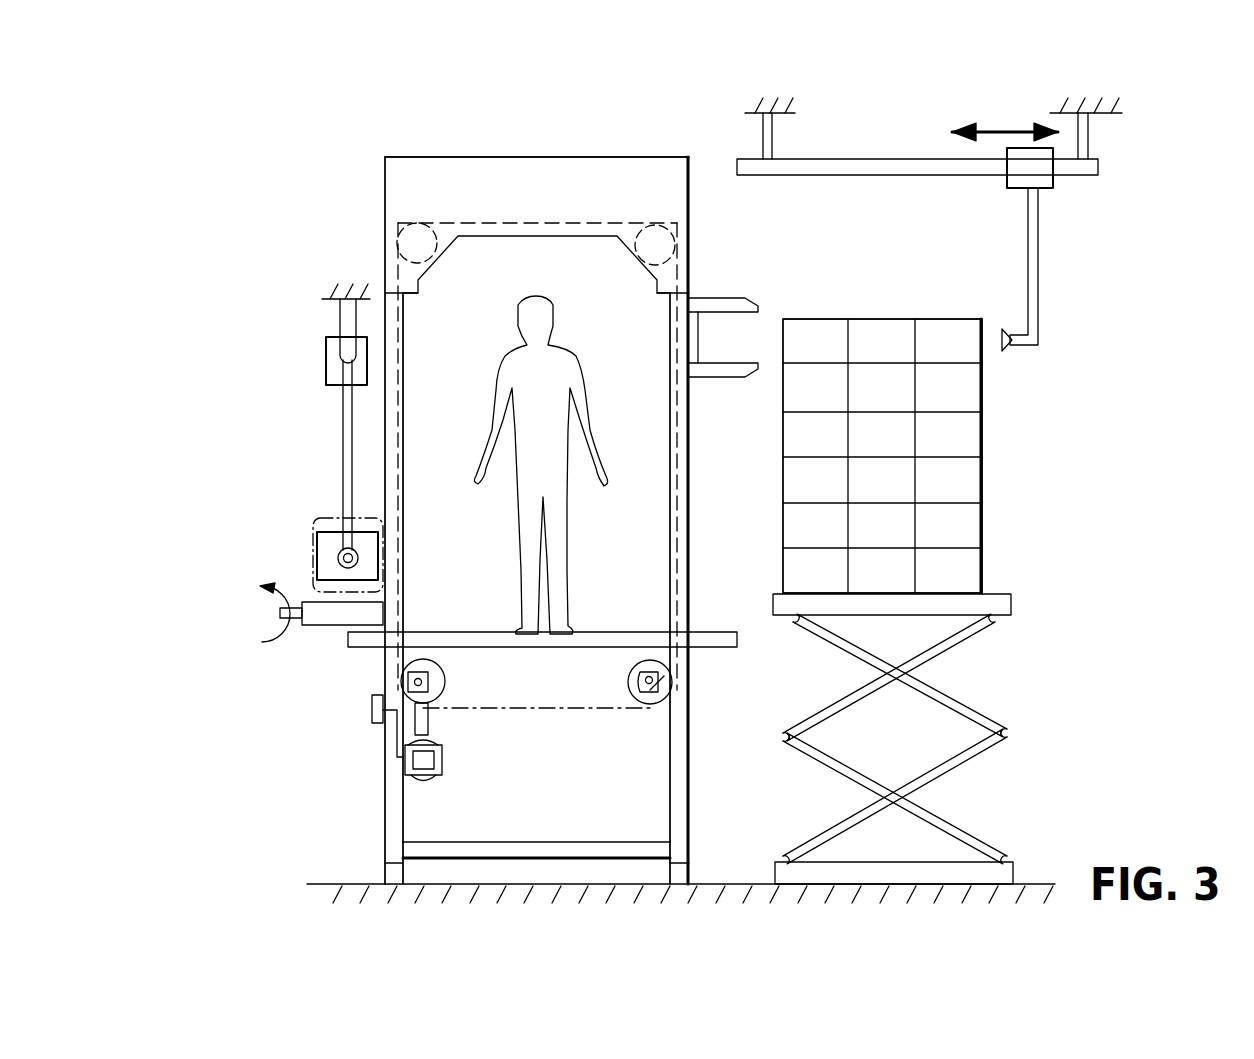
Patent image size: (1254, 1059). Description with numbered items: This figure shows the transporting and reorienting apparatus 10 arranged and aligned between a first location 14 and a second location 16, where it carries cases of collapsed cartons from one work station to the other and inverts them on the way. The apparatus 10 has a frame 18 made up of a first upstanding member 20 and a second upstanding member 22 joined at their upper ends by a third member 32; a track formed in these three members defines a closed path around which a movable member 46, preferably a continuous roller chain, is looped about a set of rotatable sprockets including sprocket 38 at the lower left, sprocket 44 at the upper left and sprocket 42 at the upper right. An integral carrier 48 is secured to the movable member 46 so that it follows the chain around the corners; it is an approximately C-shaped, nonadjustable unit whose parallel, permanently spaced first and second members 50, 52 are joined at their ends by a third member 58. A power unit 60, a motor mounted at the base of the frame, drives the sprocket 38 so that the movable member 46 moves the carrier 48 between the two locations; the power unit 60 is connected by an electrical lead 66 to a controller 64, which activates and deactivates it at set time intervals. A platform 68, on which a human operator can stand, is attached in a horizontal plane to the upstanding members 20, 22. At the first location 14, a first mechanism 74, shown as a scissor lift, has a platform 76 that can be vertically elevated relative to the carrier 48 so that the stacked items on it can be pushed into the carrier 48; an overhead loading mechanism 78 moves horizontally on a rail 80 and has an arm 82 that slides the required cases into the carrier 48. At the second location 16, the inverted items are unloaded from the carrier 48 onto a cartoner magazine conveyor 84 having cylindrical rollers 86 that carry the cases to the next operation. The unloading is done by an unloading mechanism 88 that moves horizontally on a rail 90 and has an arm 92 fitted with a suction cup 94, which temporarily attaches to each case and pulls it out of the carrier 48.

The transporting and reorienting apparatus 10 is at (682, 95).
The first location 14 is at (787, 276).
The second location 16 is at (287, 472).
The frame 18 is at (432, 148).
The first upstanding member 20 is at (385, 232).
The second upstanding member 22 is at (690, 515).
The third member 32 is at (540, 157).
The sprocket 38 is at (446, 683).
The sprocket 42 is at (668, 222).
The sprocket 44 is at (420, 222).
The movable member 46 is at (555, 710).
The integral carrier 48 is at (744, 314).
The first member 50 is at (712, 298).
The second member 52 is at (718, 378).
The third member 58 is at (700, 342).
The power unit 60 is at (427, 783).
The controller 64 is at (372, 712).
The electrical lead 66 is at (397, 742).
The platform 68 is at (600, 632).
The first mechanism 74 is at (1040, 680).
The platform 76 is at (1013, 605).
The loading mechanism 78 is at (929, 198).
The rail 80 is at (862, 158).
The arm 82 is at (1040, 308).
The cartoner magazine conveyor 84 is at (322, 627).
The cylindrical rollers 86 is at (338, 618).
The unloading mechanism 88 is at (303, 285).
The rail 90 is at (340, 352).
The arm 92 is at (343, 482).
The suction cup 94 is at (338, 560).